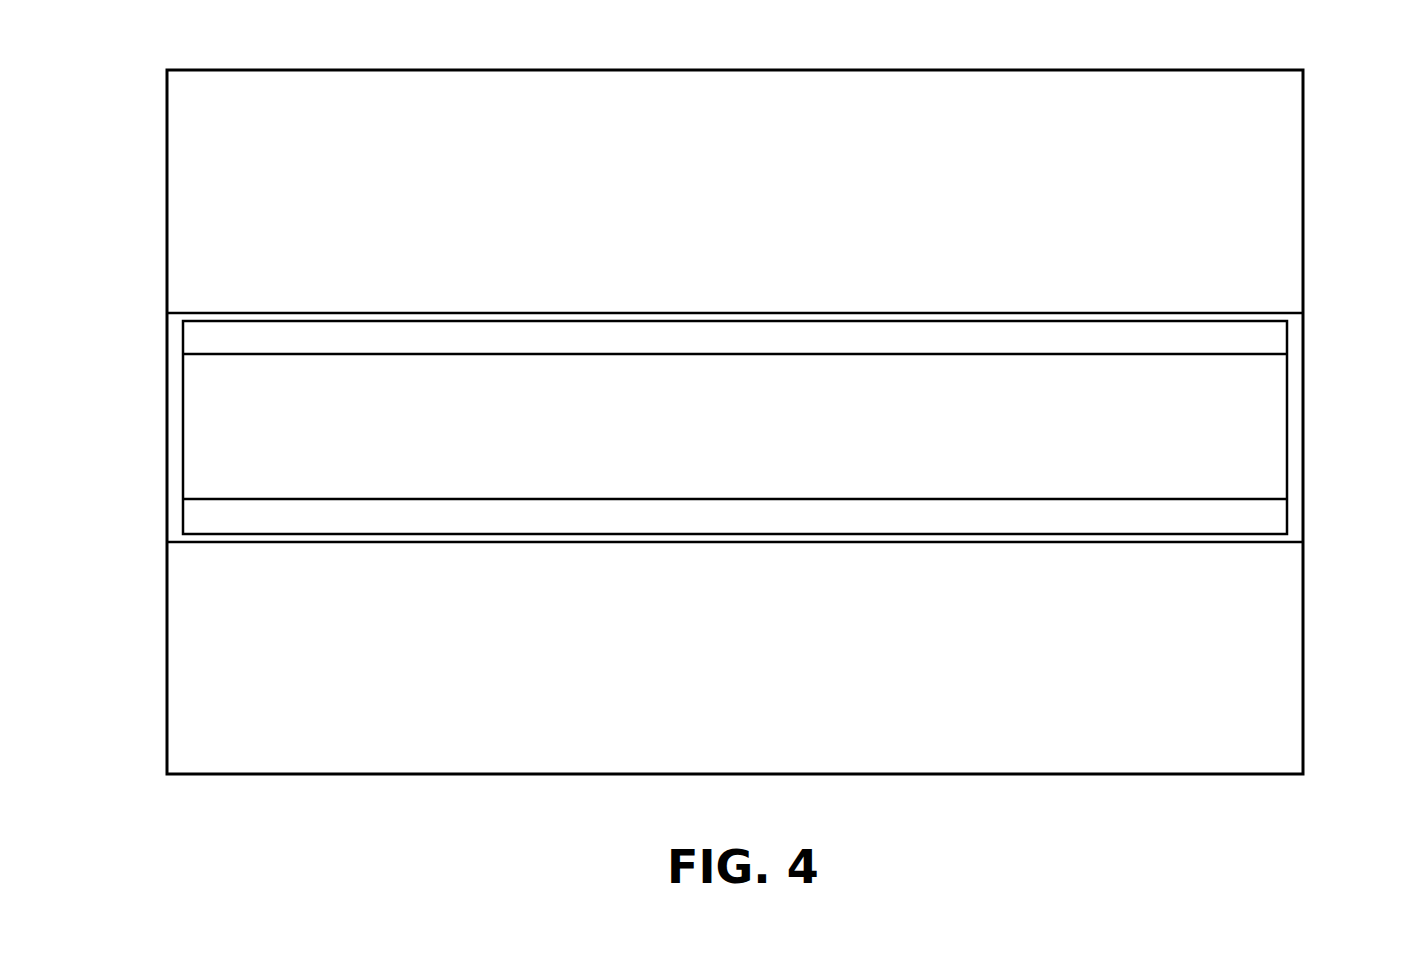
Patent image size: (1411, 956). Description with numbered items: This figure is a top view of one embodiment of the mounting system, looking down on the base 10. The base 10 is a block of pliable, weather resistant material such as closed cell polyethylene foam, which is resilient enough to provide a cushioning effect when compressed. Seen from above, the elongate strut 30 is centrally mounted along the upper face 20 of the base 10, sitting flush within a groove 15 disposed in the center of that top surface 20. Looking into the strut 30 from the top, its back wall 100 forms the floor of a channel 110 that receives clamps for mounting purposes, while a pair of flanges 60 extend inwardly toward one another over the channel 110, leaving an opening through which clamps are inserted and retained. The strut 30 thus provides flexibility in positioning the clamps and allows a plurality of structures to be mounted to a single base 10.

The base 10 is at (1045, 70).
The top surface 20 is at (1115, 192).
The groove 15 is at (176, 463).
The elongate strut 30 is at (1290, 426).
The flange 60 is at (457, 340).
The back wall 100 is at (1126, 437).
The channel 110 is at (227, 413).